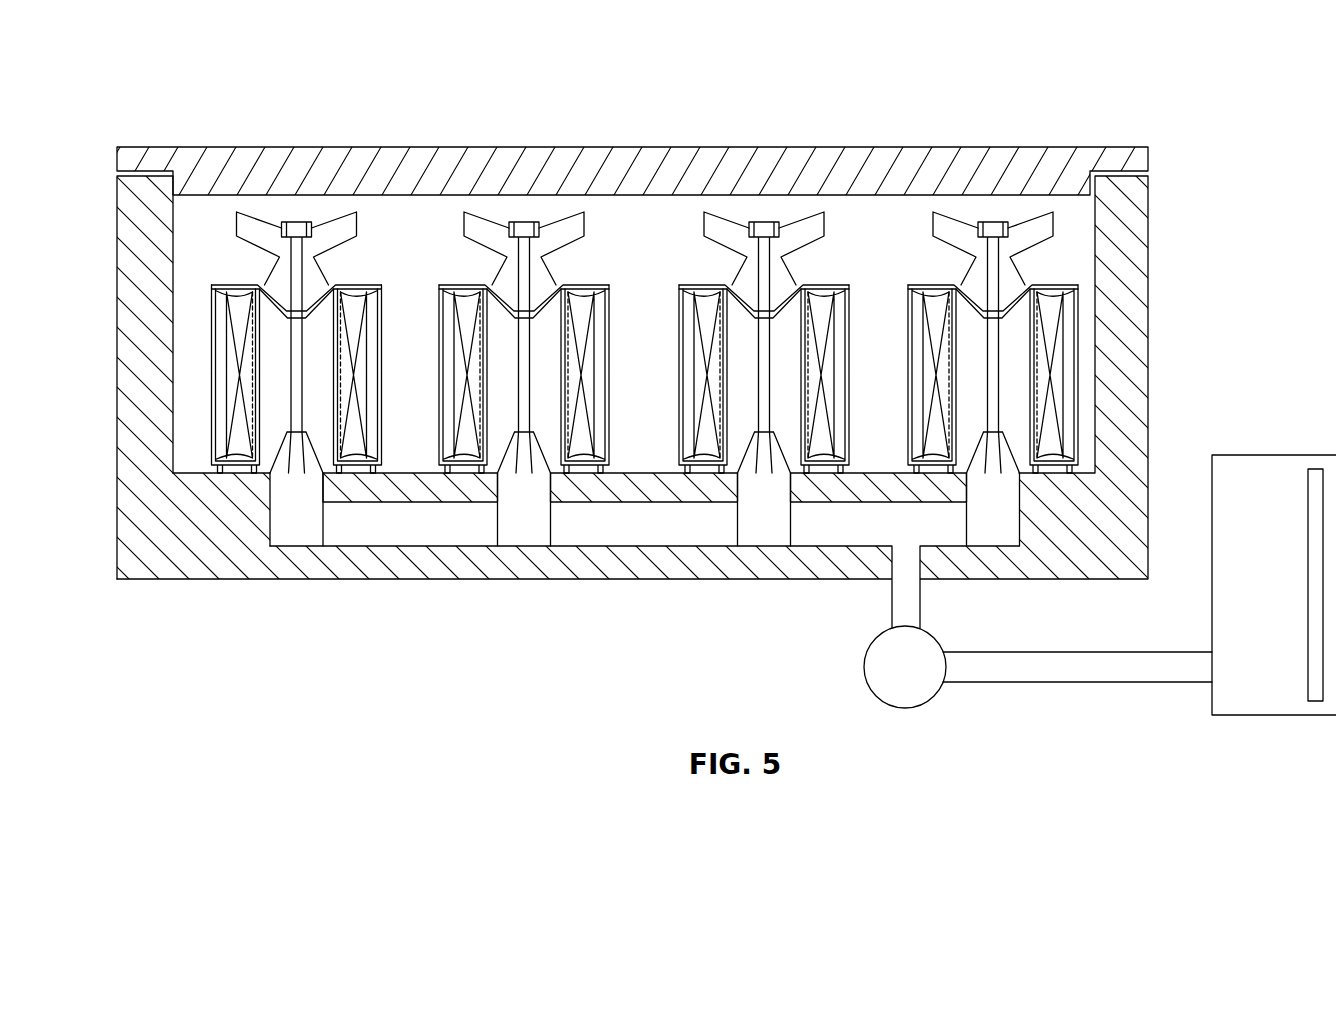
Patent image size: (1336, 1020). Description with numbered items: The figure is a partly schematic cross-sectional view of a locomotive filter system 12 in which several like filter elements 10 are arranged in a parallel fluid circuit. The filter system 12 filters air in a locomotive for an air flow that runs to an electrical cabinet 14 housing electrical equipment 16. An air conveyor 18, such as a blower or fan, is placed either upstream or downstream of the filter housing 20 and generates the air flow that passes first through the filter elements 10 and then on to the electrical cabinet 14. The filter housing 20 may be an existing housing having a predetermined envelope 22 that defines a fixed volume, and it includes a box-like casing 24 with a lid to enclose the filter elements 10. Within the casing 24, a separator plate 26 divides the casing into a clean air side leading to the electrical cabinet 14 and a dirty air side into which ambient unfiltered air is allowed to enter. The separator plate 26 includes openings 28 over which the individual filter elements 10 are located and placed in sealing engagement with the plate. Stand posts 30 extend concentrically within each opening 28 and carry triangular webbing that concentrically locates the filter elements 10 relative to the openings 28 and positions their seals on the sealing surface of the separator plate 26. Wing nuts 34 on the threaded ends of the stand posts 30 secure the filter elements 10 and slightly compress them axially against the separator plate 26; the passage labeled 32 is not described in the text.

The filter element 10 is at (388, 282).
The locomotive filter system 12 is at (472, 647).
The electrical cabinet 14 is at (1234, 716).
The electrical equipment 16 is at (1306, 483).
The air conveyor 18 is at (868, 646).
The filter housing 20 is at (138, 585).
The predetermined envelope 22 is at (173, 237).
The box-like casing 24 is at (125, 268).
The separator plate 26 is at (638, 487).
The openings 28 is at (279, 457).
The stand posts 30 is at (288, 347).
The outlet passage 32 is at (318, 457).
The wing nuts 34 is at (338, 232).